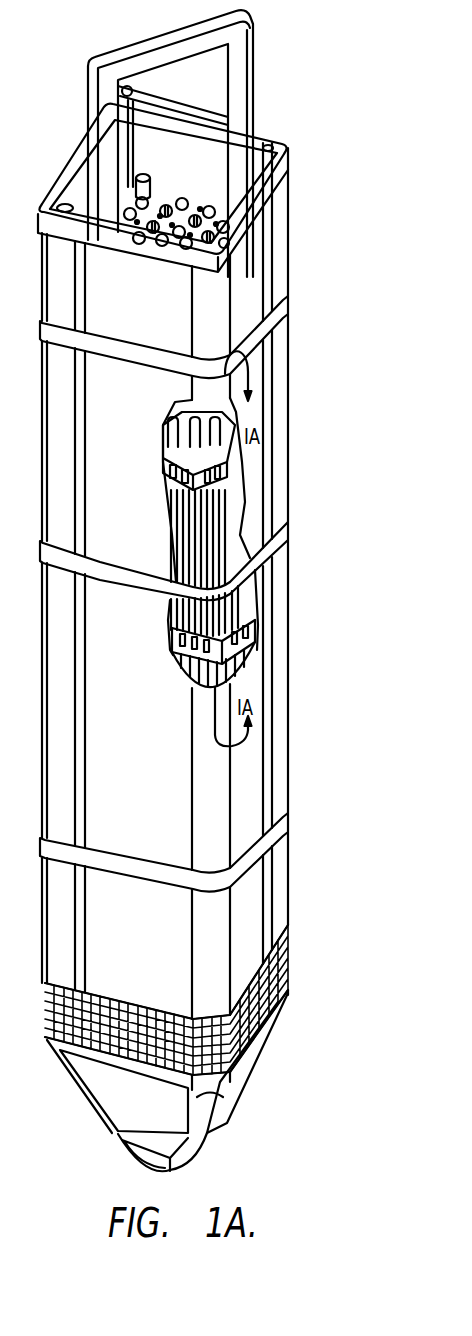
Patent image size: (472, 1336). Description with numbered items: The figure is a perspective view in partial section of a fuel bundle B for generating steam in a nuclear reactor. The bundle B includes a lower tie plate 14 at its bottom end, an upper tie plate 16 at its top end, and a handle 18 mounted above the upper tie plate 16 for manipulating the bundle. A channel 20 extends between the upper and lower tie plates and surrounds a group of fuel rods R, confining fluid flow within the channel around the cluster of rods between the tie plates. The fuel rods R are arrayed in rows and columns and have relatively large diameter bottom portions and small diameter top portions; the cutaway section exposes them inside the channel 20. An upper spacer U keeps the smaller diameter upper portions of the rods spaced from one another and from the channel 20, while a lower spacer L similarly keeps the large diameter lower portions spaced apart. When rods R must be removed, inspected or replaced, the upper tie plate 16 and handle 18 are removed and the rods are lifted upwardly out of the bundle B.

The lower tie plate 14 is at (255, 1050).
The upper tie plate 16 is at (167, 197).
The handle 18 is at (168, 32).
The channel 20 is at (287, 250).
The fuel bundle B is at (297, 671).
The upper spacer U is at (225, 467).
The fuel rods R is at (248, 571).
The lower spacer L is at (256, 612).